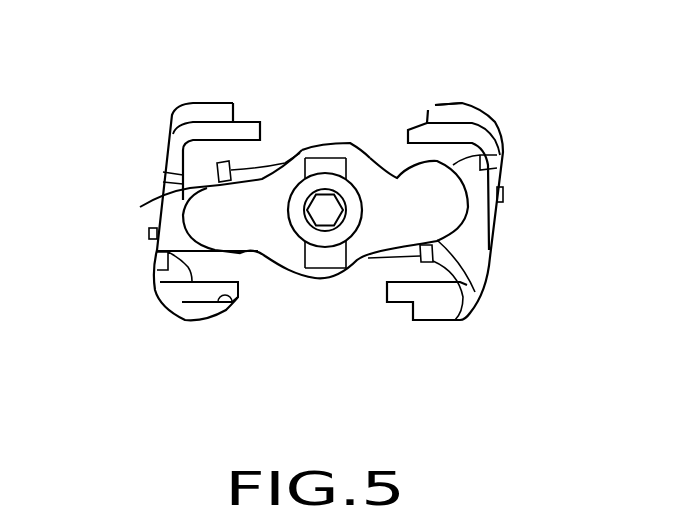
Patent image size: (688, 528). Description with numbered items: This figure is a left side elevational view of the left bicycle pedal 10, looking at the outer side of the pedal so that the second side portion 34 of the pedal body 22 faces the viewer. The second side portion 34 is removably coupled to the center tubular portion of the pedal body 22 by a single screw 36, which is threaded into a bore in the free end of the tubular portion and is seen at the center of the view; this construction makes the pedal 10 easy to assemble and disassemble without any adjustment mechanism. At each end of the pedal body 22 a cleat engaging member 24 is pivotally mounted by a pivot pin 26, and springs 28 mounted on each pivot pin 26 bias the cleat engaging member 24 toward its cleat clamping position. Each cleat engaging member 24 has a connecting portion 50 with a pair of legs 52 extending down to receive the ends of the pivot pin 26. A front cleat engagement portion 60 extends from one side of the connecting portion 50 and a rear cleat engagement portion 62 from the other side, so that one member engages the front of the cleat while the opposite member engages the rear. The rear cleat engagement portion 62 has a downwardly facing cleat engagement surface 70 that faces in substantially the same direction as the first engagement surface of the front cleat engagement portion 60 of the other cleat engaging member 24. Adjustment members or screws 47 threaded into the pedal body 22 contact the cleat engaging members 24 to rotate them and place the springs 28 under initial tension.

The bicycle pedal 10 is at (353, 113).
The pedal body 22 is at (266, 262).
The cleat engaging member 24 is at (167, 123).
The pivot pin 26 is at (475, 292).
The spring 28 is at (140, 207).
The second side portion 34 is at (470, 265).
The screw 36 is at (344, 234).
The adjustment member 47 is at (257, 170).
The connecting portion 50 is at (162, 166).
The leg 52 is at (158, 283).
The front cleat engagement portion 60 is at (202, 102).
The rear cleat engagement portion 62 is at (180, 318).
The cleat engagement surface 70 is at (237, 290).